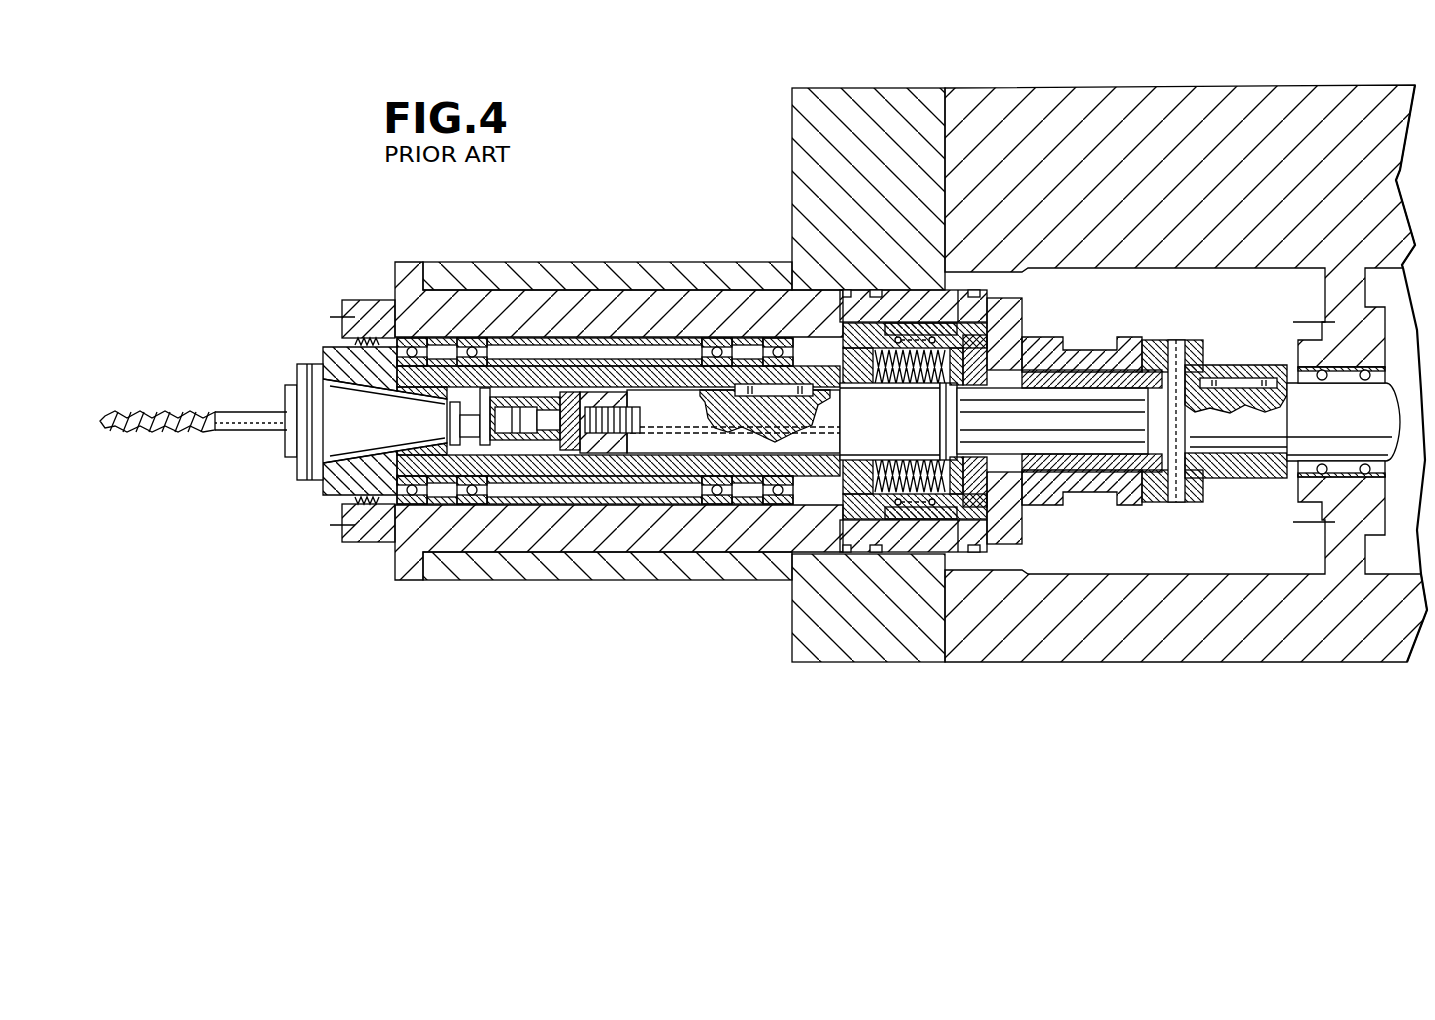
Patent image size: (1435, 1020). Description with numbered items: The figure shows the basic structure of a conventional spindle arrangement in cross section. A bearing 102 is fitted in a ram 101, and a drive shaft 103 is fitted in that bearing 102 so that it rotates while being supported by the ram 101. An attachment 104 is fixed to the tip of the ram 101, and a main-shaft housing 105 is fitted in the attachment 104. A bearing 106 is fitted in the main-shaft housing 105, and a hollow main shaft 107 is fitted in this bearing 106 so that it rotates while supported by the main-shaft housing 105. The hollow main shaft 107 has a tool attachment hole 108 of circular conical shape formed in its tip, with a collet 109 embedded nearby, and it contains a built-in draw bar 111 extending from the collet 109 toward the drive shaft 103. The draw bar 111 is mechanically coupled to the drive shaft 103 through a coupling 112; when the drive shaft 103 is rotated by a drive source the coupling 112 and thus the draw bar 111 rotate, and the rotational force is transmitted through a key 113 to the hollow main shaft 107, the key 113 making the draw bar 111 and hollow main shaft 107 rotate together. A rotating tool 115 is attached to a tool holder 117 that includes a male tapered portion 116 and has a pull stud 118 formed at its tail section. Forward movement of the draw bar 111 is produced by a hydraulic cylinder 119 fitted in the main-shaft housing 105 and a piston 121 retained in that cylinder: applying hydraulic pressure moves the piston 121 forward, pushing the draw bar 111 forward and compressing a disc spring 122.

The ram 101 is at (1180, 157).
The bearing 102 is at (1358, 366).
The drive shaft 103 is at (1312, 432).
The attachment 104 is at (677, 270).
The main-shaft housing 105 is at (597, 310).
The bearing 106 is at (472, 338).
The hollow main shaft 107 is at (338, 358).
The tool attachment hole 108 is at (365, 390).
The collet 109 is at (512, 447).
The draw bar 111 is at (680, 440).
The coupling 112 is at (1190, 343).
The key 113 is at (770, 397).
The rotating tool 115 is at (233, 427).
The male tapered portion 116 is at (377, 437).
The tool holder 117 is at (295, 468).
The pull stud 118 is at (462, 447).
The hydraulic cylinder 119 is at (922, 518).
The piston 121 is at (955, 490).
The disc spring 122 is at (900, 477).